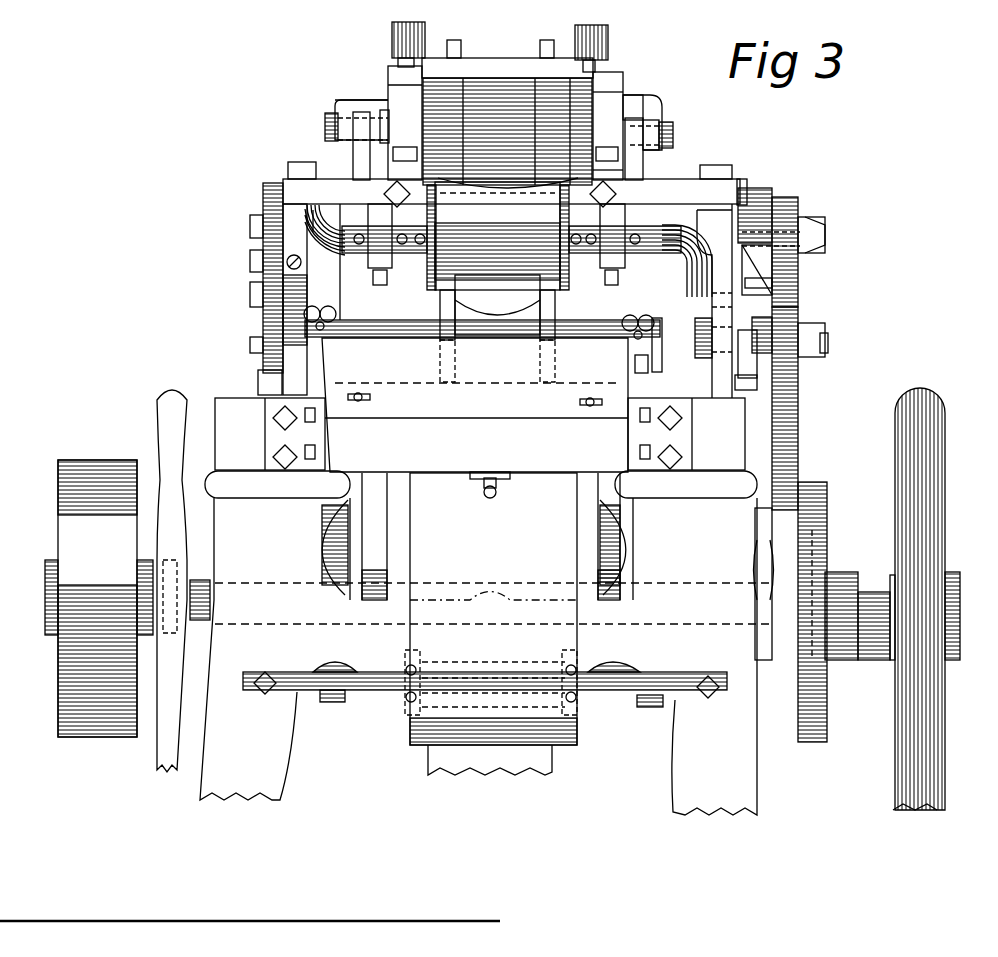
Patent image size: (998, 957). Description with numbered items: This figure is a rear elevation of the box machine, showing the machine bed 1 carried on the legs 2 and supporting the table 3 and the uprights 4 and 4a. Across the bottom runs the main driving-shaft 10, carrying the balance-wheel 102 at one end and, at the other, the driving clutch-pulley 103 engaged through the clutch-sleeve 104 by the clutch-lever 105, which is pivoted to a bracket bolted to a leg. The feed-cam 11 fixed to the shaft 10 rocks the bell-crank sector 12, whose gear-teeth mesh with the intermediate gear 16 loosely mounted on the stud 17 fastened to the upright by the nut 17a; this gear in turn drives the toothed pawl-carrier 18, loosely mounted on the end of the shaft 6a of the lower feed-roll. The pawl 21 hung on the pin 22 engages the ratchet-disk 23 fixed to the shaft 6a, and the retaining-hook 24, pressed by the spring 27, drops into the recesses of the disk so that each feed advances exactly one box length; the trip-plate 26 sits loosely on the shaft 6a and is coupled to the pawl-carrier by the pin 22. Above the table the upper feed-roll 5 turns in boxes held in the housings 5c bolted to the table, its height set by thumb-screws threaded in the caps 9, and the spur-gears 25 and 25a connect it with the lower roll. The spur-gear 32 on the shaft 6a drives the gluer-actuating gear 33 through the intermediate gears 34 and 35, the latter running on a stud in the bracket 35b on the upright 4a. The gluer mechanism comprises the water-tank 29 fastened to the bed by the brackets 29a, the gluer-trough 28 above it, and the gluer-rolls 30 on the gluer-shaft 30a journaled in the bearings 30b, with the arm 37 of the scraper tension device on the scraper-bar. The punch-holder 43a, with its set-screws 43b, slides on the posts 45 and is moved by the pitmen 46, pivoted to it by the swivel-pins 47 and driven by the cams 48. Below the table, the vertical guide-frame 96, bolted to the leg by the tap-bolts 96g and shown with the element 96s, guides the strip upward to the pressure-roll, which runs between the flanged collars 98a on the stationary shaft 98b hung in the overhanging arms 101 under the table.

The bed 1 is at (220, 415).
The legs 2 is at (280, 800).
The table 3 is at (724, 197).
The upright 4 is at (712, 385).
The upright 4a is at (258, 385).
The upper feed-roll 5 is at (490, 84).
The housings 5c is at (398, 100).
The shaft 6a is at (670, 250).
The caps 9 is at (398, 74).
The main driving-shaft 10 is at (45, 603).
The feed-cam 11 is at (814, 743).
The sector 12 is at (783, 558).
The intermediate gear 16 is at (800, 383).
The stud 17 is at (700, 358).
The nut 17a is at (826, 353).
The pawl-carrier 18 is at (806, 230).
The pawl 21 is at (772, 282).
The pin 22 is at (760, 238).
The ratchet-disk 23 is at (735, 186).
The retaining-hook 24 is at (748, 275).
The spur-gear 25 is at (614, 105).
The spur-gear 25a is at (623, 178).
The trip-plate 26 is at (742, 235).
The spring 27 is at (800, 352).
The gluer-trough 28 is at (462, 412).
The water-tank 29 is at (456, 474).
The brackets 29a is at (270, 432).
The gluer-rolls 30 is at (522, 300).
The gluer-shaft 30a is at (395, 321).
The bearings 30b is at (318, 310).
The spur-gear 32 is at (266, 192).
The gluer-actuating gear 33 is at (258, 344).
The intermediate gear 34 is at (258, 250).
The intermediate gear 35 is at (258, 294).
The bracket 35b is at (300, 290).
The arm 37 is at (655, 349).
The punch-holder 43a is at (345, 100).
The set-screws 43b is at (545, 40).
The posts 45 is at (392, 26).
The pitmen 46 is at (355, 160).
The swivel-pins 47 is at (325, 125).
The cams 48 is at (328, 703).
The vertical guide-frame 96 is at (573, 745).
The tap-bolts 96g is at (266, 695).
The shaft 96s is at (383, 692).
The flanged collars 98a is at (498, 236).
The stationary shaft 98b is at (352, 232).
The overhanging arms 101 is at (378, 212).
The balance-wheel 102 is at (947, 420).
The driving clutch-pulley 103 is at (60, 478).
The clutch-sleeve 104 is at (148, 637).
The clutch-lever 105 is at (160, 424).